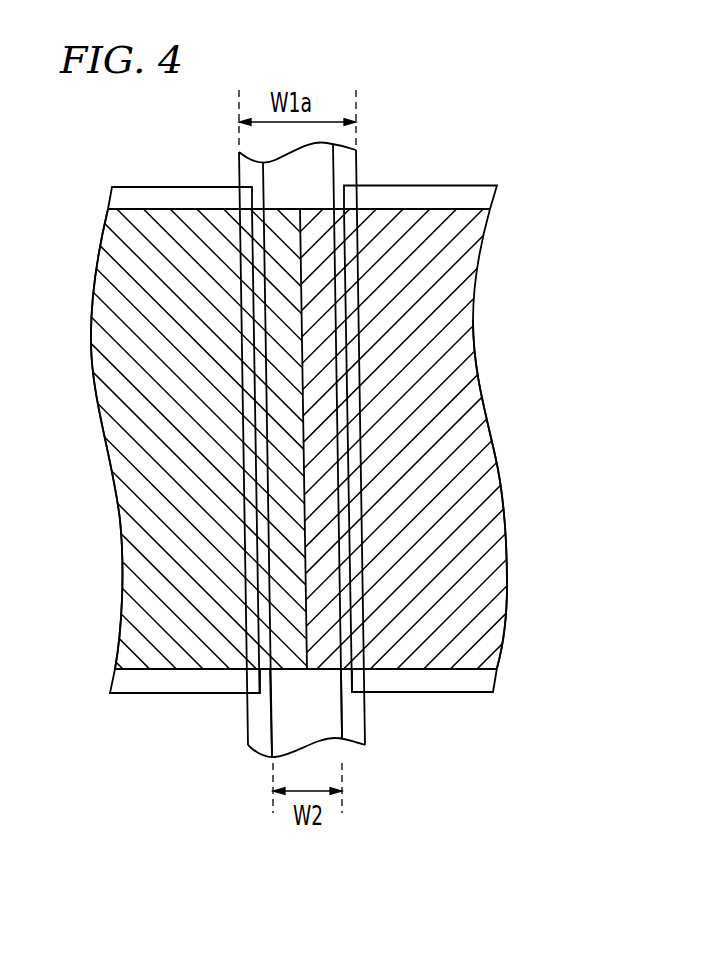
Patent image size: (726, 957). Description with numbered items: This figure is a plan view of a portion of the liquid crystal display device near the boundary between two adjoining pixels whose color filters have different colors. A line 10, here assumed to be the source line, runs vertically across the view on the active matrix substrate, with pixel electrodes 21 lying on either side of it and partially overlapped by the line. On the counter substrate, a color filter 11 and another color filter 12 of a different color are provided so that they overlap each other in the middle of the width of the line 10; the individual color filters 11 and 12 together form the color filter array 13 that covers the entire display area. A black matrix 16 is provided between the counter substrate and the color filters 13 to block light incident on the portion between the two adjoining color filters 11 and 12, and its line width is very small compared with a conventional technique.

The line 10 is at (237, 167).
The color filter 11 is at (460, 383).
The color filter 12 is at (118, 386).
The color filter array 13 is at (470, 455).
The black matrix 16 is at (342, 710).
The pixel electrode 21 is at (140, 187).